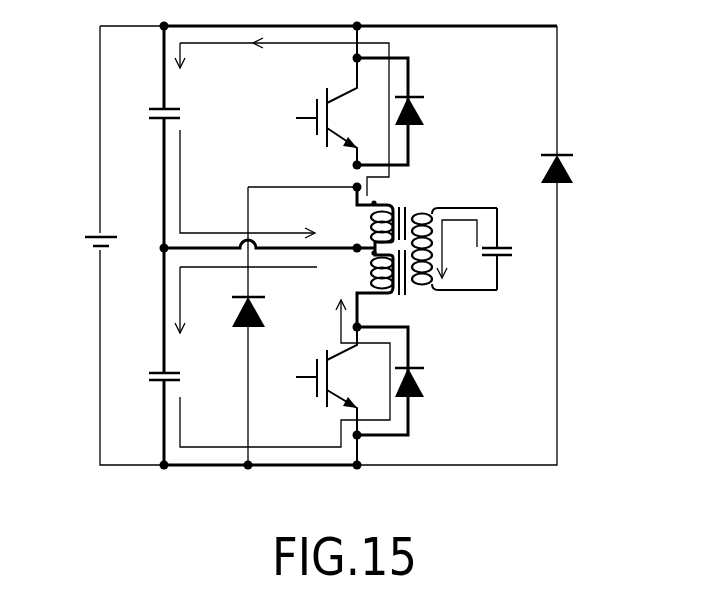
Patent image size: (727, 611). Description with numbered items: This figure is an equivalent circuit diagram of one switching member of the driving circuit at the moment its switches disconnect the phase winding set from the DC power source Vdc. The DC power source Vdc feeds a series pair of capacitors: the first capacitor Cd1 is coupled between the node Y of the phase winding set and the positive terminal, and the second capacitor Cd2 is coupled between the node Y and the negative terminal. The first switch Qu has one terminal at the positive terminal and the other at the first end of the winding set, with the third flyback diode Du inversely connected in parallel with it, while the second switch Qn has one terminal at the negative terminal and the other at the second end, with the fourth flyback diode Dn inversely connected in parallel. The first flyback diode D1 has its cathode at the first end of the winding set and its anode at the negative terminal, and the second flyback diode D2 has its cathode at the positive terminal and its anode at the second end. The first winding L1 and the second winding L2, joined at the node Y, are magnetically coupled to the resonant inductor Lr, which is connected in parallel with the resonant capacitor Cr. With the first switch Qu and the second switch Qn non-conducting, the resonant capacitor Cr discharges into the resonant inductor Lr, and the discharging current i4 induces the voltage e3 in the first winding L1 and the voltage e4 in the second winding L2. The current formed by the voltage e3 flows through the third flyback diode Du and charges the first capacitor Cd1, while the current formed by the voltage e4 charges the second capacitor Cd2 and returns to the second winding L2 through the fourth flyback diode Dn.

The DC power source Vdc is at (83, 236).
The first capacitor Cd1 is at (175, 137).
The second capacitor Cd2 is at (175, 356).
The node Y is at (256, 250).
The first flyback diode D1 is at (294, 326).
The second flyback diode D2 is at (563, 156).
The first switch Qu is at (334, 95).
The third flyback diode Du is at (397, 111).
The second switch Qn is at (334, 396).
The fourth flyback diode Dn is at (397, 381).
The first winding L1 is at (392, 205).
The second winding L2 is at (392, 295).
The resonant inductor Lr is at (454, 249).
The resonant capacitor Cr is at (503, 249).
The voltage induced in the first winding e3 is at (355, 222).
The voltage induced in the second winding e4 is at (355, 272).
The discharging current i4 is at (457, 249).